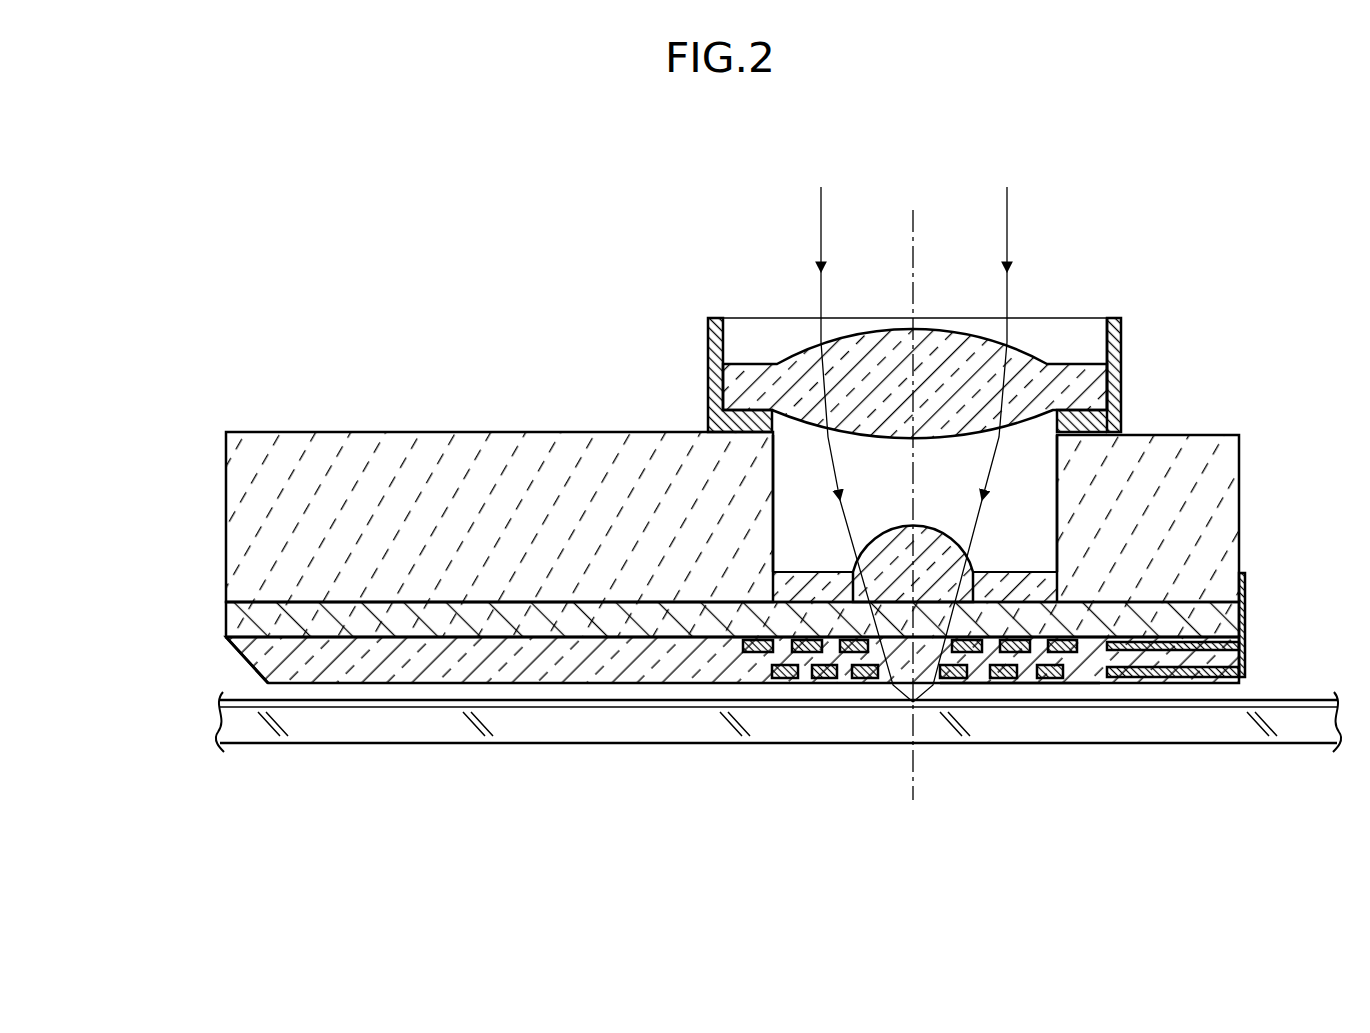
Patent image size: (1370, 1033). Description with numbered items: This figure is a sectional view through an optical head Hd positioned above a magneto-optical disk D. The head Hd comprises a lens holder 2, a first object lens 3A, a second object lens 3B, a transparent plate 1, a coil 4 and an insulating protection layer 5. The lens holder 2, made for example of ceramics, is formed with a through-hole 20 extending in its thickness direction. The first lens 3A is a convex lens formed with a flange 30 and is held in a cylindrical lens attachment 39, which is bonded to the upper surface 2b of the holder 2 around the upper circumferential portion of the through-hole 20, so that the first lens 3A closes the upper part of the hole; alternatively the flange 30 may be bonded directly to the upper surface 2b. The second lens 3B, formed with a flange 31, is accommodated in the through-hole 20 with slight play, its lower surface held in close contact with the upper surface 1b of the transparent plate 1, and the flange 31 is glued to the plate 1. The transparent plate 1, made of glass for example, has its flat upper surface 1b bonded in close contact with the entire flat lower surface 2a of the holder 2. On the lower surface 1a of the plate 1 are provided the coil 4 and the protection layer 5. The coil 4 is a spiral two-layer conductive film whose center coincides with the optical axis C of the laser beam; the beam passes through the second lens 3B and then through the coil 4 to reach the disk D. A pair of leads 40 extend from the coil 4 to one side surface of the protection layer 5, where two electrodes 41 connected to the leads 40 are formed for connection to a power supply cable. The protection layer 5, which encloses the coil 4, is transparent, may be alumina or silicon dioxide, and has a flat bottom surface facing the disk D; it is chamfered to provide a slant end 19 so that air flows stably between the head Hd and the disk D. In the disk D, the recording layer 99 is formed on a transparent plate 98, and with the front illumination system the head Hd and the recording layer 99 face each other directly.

The transparent plate 1 is at (1175, 622).
The lower surface of the transparent plate 1a is at (716, 640).
The upper surface of the transparent plate 1b is at (780, 602).
The lens holder 2 is at (1228, 462).
The lower surface of the lens holder 2a is at (600, 606).
The upper surface of the lens holder 2b is at (607, 432).
The first object lens 3A is at (1020, 364).
The second object lens 3B is at (945, 537).
The coil 4 is at (1070, 652).
The insulating protection layer 5 is at (1082, 672).
The slant end 19 is at (240, 660).
The through-hole 20 is at (1032, 468).
The flange 30 is at (1084, 375).
The flange 31 is at (815, 588).
The lens attachment 39 is at (1118, 380).
The leads 40 is at (1157, 672).
The electrodes 41 is at (1245, 665).
The transparent plate 98 is at (302, 730).
The recording layer 99 is at (313, 698).
The optical axis C is at (915, 322).
The magneto-optical disk D is at (245, 695).
The optical head Hd is at (1200, 270).